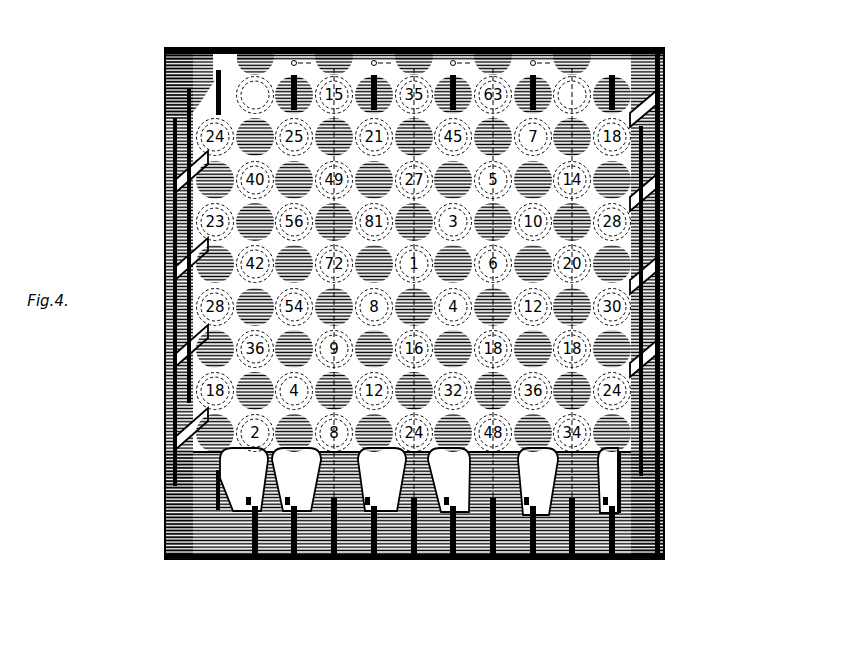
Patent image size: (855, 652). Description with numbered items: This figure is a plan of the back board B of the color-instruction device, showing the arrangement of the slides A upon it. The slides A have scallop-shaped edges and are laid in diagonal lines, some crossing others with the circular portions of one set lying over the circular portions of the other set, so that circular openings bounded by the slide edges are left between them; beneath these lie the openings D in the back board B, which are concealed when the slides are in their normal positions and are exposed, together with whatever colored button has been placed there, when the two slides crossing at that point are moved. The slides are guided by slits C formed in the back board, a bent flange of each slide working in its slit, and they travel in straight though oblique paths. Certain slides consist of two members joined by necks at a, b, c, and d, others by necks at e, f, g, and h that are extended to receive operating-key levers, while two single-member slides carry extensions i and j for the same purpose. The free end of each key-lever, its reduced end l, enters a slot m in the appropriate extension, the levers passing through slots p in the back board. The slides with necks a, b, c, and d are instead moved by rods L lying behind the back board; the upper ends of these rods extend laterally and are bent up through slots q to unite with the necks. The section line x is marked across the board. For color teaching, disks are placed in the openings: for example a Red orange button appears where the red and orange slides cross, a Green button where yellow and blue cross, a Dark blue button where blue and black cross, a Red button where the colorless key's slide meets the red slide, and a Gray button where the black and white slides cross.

The neck a is at (288, 52).
The neck b is at (362, 52).
The neck c is at (442, 52).
The neck d is at (520, 52).
The slot q is at (272, 66).
The slide A is at (168, 238).
The back board B is at (656, 50).
The slit C is at (162, 140).
The opening D is at (652, 188).
The rod L is at (668, 490).
The section line x is at (157, 380).
The slot p is at (246, 549).
The extension i is at (246, 479).
The neck e is at (296, 479).
The neck f is at (382, 479).
The neck g is at (449, 480).
The neck h is at (538, 481).
The extension j is at (609, 480).
The slot m is at (421, 495).
The reduced end l is at (444, 494).
The gray button Gray is at (178, 204).
The red button Red is at (168, 452).
The red-orange button Red orange is at (660, 240).
The green button Green is at (410, 447).
The dark-blue button Dark blue is at (497, 440).